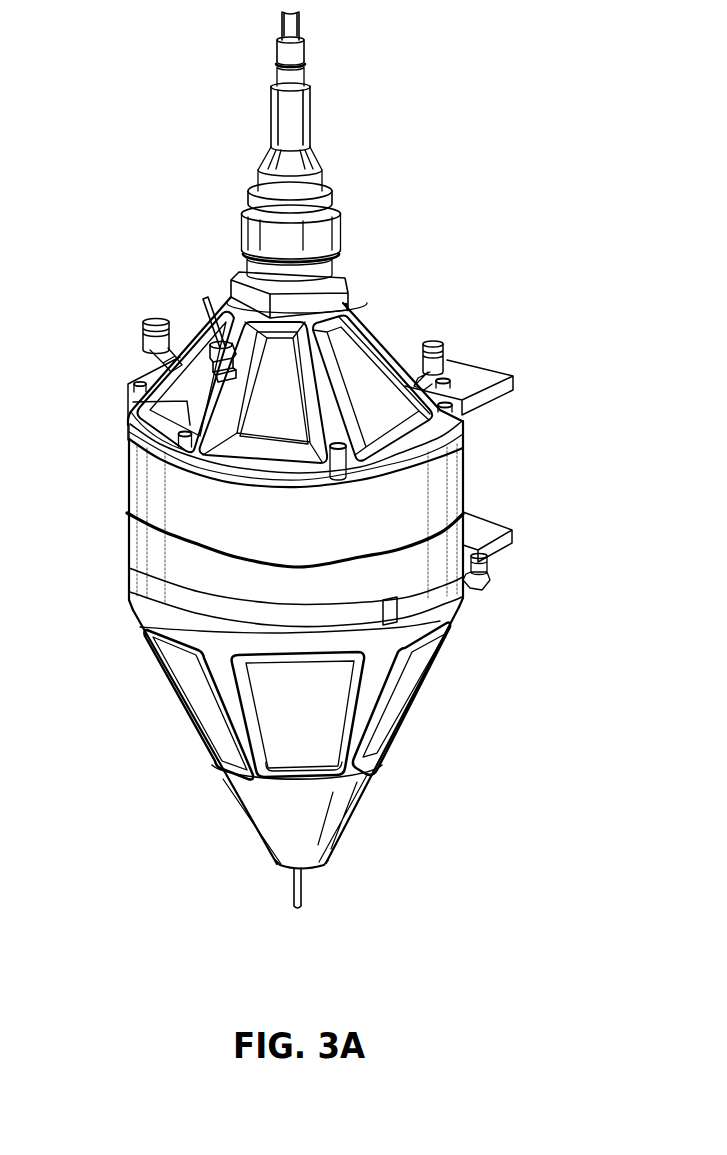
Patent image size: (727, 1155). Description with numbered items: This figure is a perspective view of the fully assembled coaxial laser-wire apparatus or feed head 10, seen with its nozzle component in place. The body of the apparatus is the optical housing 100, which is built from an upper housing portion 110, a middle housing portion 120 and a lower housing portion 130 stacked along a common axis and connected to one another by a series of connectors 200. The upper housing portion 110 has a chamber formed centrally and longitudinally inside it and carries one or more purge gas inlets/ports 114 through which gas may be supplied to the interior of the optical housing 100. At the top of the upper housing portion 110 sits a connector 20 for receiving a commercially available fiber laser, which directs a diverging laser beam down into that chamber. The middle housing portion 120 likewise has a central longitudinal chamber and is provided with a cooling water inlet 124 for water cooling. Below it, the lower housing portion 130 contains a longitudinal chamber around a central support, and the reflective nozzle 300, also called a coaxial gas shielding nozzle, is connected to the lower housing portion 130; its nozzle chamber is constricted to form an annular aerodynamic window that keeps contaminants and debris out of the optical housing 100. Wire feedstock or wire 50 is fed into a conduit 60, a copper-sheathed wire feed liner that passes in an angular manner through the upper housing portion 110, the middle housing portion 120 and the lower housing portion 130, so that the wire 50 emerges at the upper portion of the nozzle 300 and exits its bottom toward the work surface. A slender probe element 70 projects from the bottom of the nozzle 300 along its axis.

The coaxial laser-wire apparatus or feed head 10 is at (104, 114).
The connector 20 is at (338, 228).
The wire feedstock or wire 50 is at (205, 297).
The conduit (wire feed liner) 60 is at (207, 356).
The probe tip 70 is at (303, 893).
The optical housing 100 is at (104, 484).
The upper housing portion 110 is at (376, 314).
The purge gas inlets/ports 114 is at (150, 322).
The middle housing portion 120 is at (465, 473).
The cooling water inlet 124 is at (481, 568).
The lower housing portion 130 is at (168, 671).
The connectors 200 is at (165, 450).
The reflective nozzle (coaxial gas shielding nozzle) 300 is at (362, 793).